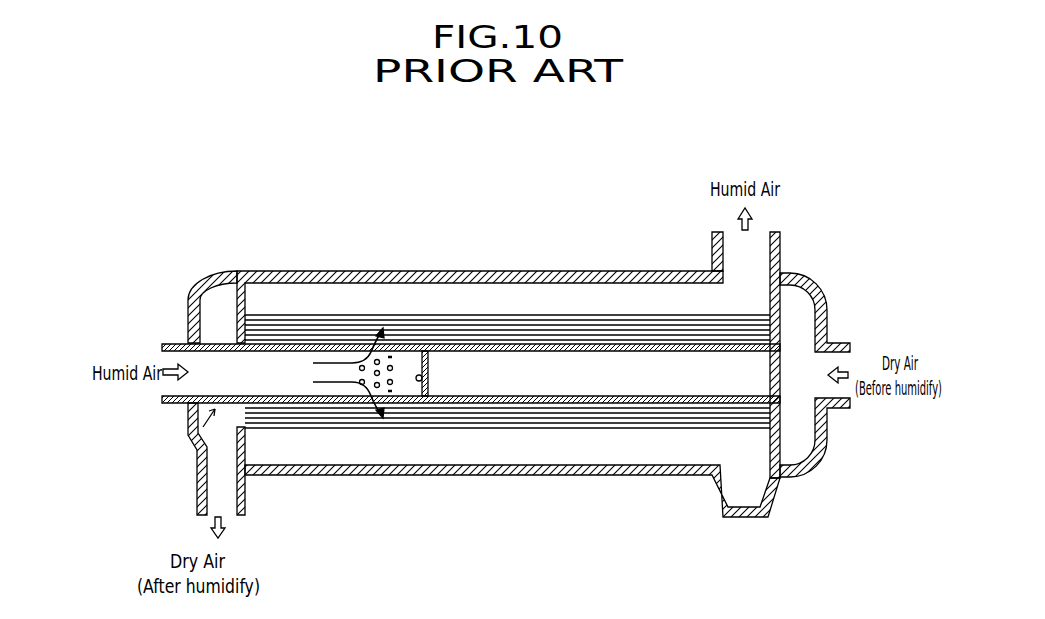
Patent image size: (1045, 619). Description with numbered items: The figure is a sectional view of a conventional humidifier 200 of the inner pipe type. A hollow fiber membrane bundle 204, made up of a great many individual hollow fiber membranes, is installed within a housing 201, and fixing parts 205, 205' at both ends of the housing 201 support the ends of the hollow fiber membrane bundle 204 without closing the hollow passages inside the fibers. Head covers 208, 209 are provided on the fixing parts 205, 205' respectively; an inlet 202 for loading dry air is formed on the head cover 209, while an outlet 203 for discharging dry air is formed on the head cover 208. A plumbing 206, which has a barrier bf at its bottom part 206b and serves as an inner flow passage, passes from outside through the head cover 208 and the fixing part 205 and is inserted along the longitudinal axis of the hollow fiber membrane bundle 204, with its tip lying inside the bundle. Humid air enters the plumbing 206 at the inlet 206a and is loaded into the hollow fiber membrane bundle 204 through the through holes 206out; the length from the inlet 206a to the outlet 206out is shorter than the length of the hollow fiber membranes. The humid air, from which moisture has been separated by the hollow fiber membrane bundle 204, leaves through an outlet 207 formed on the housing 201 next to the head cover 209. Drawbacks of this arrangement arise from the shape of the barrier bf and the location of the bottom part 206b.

The humidifier 200 is at (517, 247).
The housing 201 is at (380, 478).
The inlet 202 is at (833, 410).
The outlet 203 is at (195, 471).
The hollow fiber membrane bundle 204 is at (543, 418).
The fixing part 205 is at (271, 497).
The fixing part 205' is at (795, 401).
The plumbing 206 is at (190, 440).
The inlet 206a is at (173, 343).
The bottom part 206b is at (393, 327).
The through holes 206out is at (381, 328).
The outlet 207 is at (711, 255).
The head cover 208 is at (202, 278).
The head cover 209 is at (813, 283).
The barrier bf is at (432, 378).